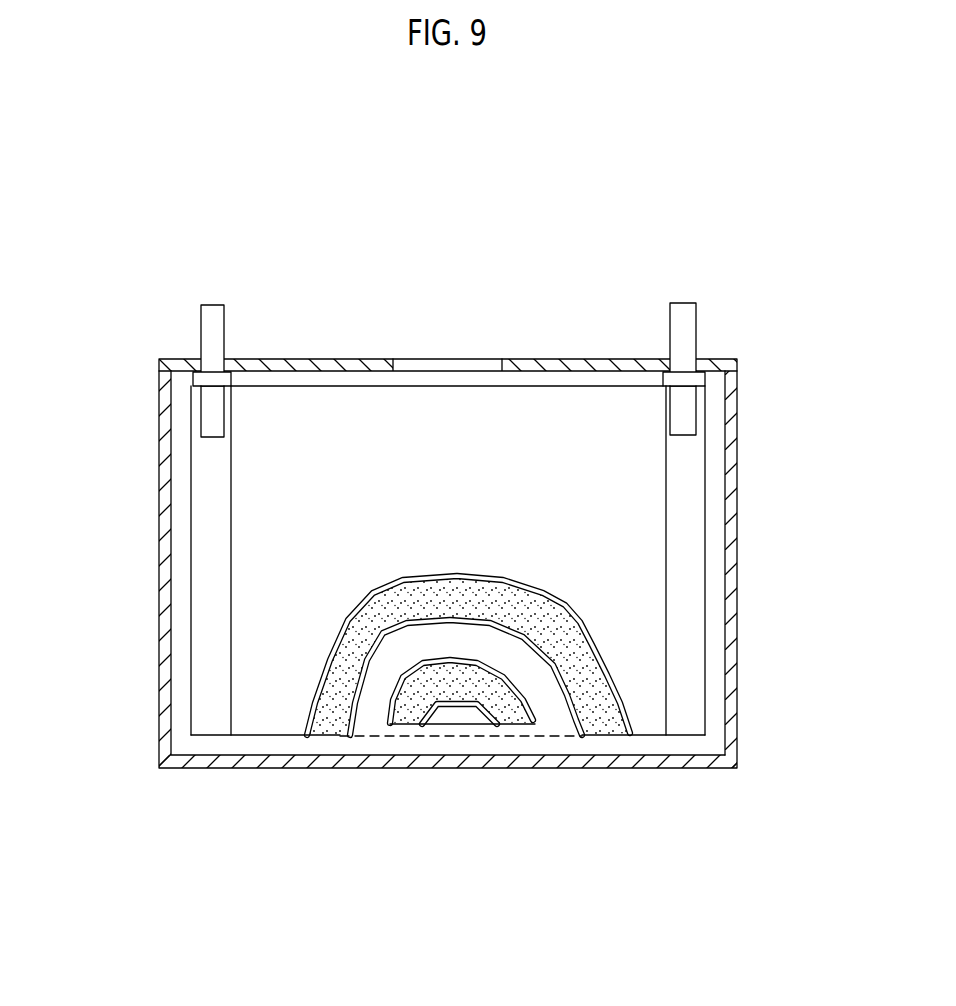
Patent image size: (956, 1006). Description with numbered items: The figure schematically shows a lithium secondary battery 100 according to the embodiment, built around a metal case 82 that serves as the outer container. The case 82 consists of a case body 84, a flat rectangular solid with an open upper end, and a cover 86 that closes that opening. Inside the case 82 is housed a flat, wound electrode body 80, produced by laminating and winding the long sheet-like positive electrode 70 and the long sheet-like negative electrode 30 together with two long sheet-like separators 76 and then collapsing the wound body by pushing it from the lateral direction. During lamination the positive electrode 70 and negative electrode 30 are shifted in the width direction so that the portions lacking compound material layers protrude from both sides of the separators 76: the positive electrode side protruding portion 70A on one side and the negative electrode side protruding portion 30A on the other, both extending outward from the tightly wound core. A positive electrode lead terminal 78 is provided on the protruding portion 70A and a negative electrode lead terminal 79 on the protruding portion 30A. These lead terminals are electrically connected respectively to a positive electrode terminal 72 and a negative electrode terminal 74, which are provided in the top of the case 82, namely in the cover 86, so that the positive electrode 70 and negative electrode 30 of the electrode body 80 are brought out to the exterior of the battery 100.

The lithium secondary battery 100 is at (605, 195).
The case 82 is at (738, 513).
The case body 84 is at (732, 640).
The cover 86 is at (330, 362).
The negative electrode terminal 74 is at (214, 318).
The positive electrode terminal 72 is at (684, 318).
The negative electrode lead terminal 79 is at (218, 421).
The positive electrode lead terminal 78 is at (683, 420).
The negative electrode side protruding portion 30A is at (210, 594).
The positive electrode side protruding portion 70A is at (688, 615).
The negative electrode 30 is at (283, 718).
The positive electrode 70 is at (378, 718).
The separator 76 is at (332, 720).
The electrode body 80 is at (638, 738).